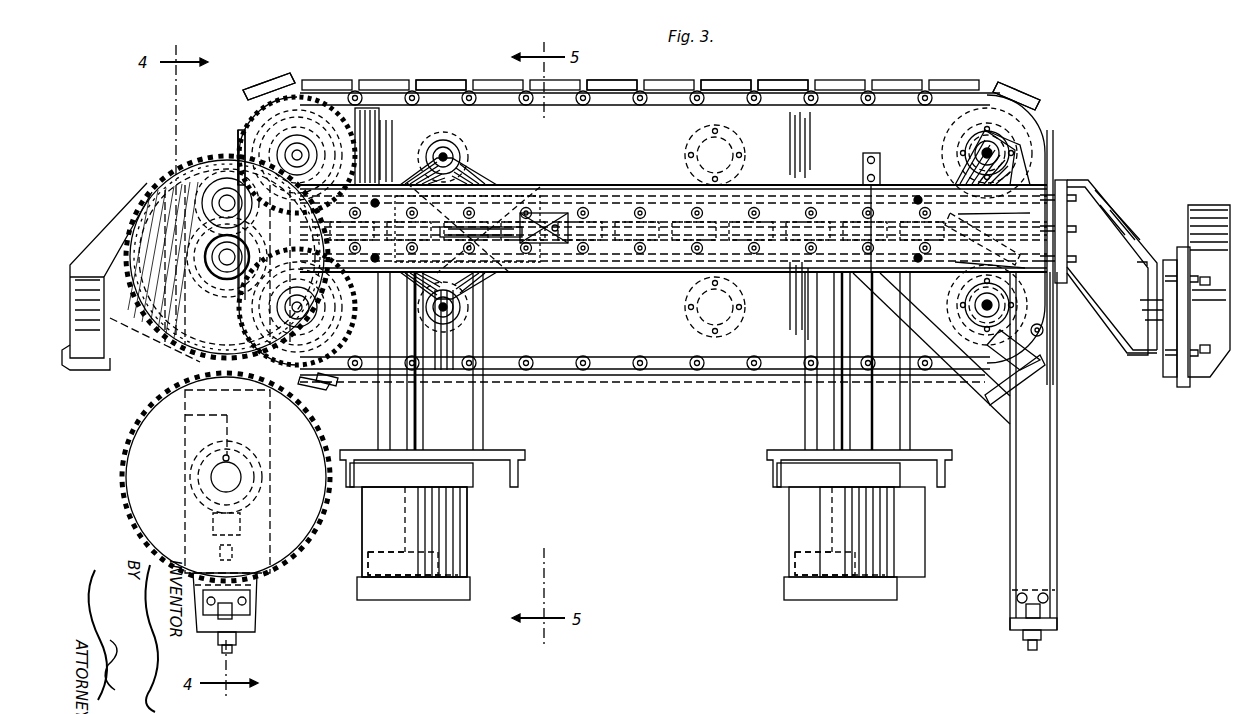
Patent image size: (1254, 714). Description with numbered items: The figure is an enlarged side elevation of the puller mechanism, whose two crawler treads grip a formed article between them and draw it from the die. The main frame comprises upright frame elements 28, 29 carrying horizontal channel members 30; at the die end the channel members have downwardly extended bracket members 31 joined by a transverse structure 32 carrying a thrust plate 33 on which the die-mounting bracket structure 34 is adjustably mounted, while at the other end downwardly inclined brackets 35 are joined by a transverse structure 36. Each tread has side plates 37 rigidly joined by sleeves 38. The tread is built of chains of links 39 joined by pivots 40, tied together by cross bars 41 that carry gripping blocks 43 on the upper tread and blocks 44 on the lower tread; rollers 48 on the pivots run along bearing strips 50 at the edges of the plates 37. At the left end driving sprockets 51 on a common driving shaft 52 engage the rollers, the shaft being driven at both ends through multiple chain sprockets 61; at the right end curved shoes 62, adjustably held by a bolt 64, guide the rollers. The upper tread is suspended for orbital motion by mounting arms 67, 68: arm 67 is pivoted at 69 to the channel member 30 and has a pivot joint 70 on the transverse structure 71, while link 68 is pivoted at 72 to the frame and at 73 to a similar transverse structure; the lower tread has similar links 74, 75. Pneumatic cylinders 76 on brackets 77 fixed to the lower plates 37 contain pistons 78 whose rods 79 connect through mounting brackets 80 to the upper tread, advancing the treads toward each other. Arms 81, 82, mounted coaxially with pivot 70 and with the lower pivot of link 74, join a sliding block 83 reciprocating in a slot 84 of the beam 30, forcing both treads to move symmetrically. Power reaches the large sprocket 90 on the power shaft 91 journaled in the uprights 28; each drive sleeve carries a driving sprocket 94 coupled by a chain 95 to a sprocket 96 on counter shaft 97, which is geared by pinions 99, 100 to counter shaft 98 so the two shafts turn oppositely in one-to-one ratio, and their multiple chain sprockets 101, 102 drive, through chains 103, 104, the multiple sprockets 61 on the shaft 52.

The upright frame element 28 is at (262, 588).
The upright frame element 29 is at (1048, 535).
The horizontal channel member 30 is at (630, 186).
The downwardly extended bracket member 31 is at (1100, 202).
The transverse structure 32 is at (1150, 322).
The abutment or thrust plate 33 is at (1175, 330).
The bracket structure 34 is at (1210, 345).
The downwardly inclined bracket 35 is at (108, 236).
The transverse structure 36 is at (86, 364).
The side plate or frame member 37 is at (825, 110).
The sleeve 38 is at (462, 134).
The link 39 is at (740, 80).
The pivot 40 is at (590, 100).
The cross bar or tread link device 41 is at (604, 80).
The gripping block 43 is at (445, 80).
The gripping block 44 is at (312, 385).
The roller 48 is at (368, 88).
The bearing strip 50 is at (608, 196).
The driving sprocket 51 is at (358, 146).
The driving shaft 52 is at (290, 150).
The multiple chain sprocket 61 is at (305, 100).
The curved shoe or guiding plate 62 is at (1010, 118).
The bolt 64 is at (992, 332).
The mounting arm 67 is at (398, 185).
The mounting arm or link 68 is at (962, 172).
The pivot 69 is at (372, 202).
The pivot joint 70 is at (455, 160).
The transverse structure 71 is at (456, 140).
The pivot 72 is at (917, 196).
The pivot 73 is at (1020, 148).
The mounting link 74 is at (408, 280).
The mounting link 75 is at (955, 296).
The cylinder 76 is at (468, 522).
The bracket 77 is at (484, 405).
The piston 78 is at (398, 576).
The piston stem or rod 79 is at (425, 411).
The mounting bracket 80 is at (862, 160).
The arm or link 81 is at (490, 180).
The arm or link 82 is at (468, 290).
The sliding block 83 is at (560, 226).
The slot 84 is at (492, 237).
The large sprocket 90 is at (135, 422).
The power shaft 91 is at (222, 480).
The driving sprocket 94 is at (232, 440).
The chain 95 is at (160, 368).
The sprocket 96 is at (140, 207).
The counter shaft 97 is at (218, 258).
The counter shaft 98 is at (215, 163).
The pinion 99 is at (200, 238).
The pinion 100 is at (190, 176).
The multiple chain sprocket 101 is at (205, 257).
The multiple chain sprocket 102 is at (222, 208).
The chain 103 is at (170, 312).
The chain 104 is at (245, 165).